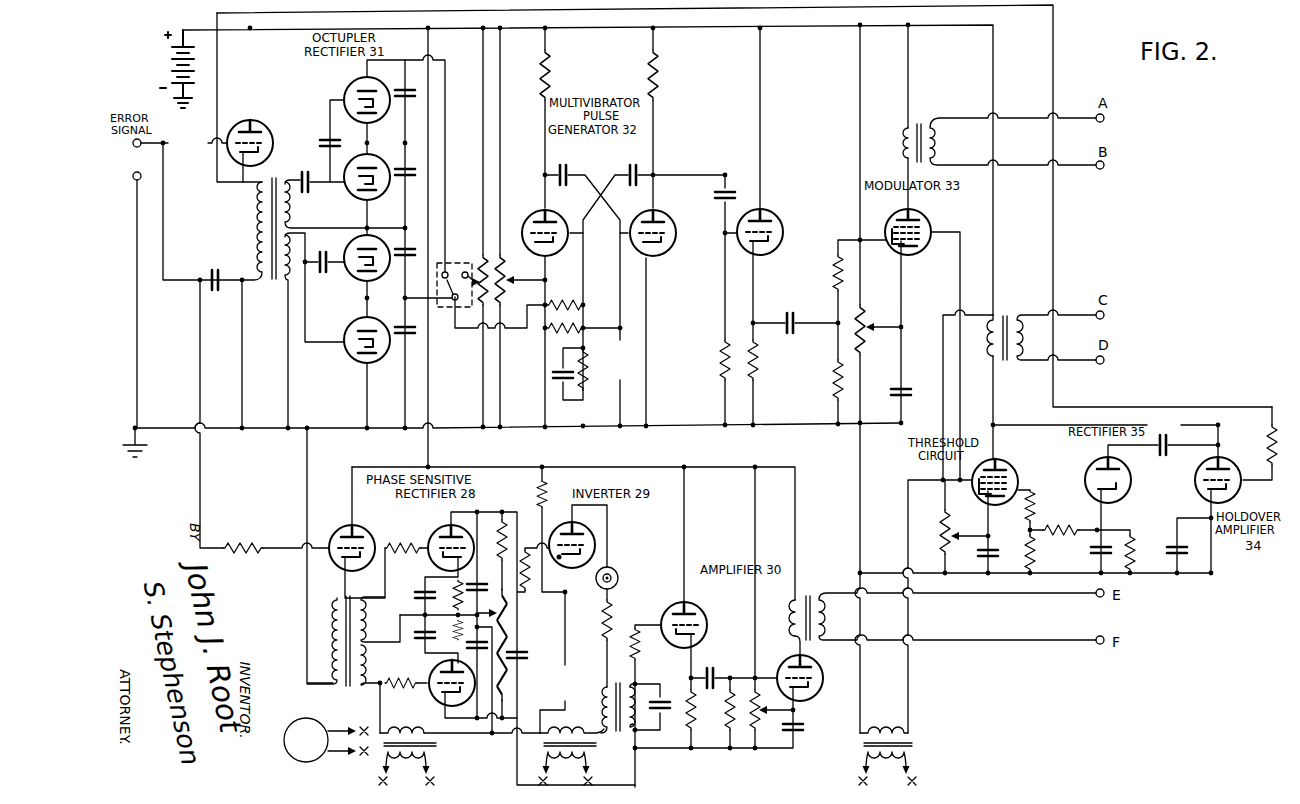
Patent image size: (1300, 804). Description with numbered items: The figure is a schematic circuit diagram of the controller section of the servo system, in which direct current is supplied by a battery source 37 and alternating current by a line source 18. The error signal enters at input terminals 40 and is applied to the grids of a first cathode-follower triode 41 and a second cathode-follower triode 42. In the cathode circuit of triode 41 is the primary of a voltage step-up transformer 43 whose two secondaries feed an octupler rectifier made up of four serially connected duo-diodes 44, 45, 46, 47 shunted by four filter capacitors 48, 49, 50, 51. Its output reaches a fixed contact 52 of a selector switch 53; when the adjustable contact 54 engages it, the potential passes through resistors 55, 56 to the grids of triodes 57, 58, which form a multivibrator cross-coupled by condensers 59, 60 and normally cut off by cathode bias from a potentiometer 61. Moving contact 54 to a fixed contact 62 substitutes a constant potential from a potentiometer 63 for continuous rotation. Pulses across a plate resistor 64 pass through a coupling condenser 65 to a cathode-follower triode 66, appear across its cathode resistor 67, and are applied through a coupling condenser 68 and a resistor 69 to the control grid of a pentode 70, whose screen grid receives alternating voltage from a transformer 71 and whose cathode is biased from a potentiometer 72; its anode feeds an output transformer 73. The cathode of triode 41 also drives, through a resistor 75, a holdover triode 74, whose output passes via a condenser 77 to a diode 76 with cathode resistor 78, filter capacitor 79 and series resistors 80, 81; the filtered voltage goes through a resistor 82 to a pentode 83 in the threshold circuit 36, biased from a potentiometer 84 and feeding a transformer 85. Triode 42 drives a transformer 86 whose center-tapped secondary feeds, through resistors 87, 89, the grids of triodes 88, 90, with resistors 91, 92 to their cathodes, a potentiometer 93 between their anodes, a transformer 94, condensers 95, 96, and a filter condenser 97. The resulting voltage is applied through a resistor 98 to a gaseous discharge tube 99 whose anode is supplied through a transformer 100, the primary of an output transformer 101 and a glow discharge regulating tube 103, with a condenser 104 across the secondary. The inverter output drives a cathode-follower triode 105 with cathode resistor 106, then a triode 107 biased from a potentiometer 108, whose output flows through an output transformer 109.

The line source 18 is at (299, 719).
The threshold circuit 36 is at (954, 465).
The battery source 37 is at (170, 76).
The input terminals 40 is at (122, 148).
The triode 41 is at (264, 128).
The triode 42 is at (319, 534).
The voltage step-up transformer 43 is at (279, 280).
The duo-diode 44 is at (346, 128).
The duo-diode 45 is at (352, 196).
The duo-diode 46 is at (347, 247).
The duo-diode 47 is at (356, 362).
The filter capacitor 48 is at (405, 88).
The filter capacitor 49 is at (407, 169).
The filter capacitor 50 is at (412, 242).
The filter capacitor 51 is at (412, 320).
The fixed contact 52 is at (443, 271).
The selector switch 53 is at (446, 307).
The adjustable contact 54 is at (428, 289).
The resistor 55 is at (565, 333).
The resistor 56 is at (570, 293).
The triode 57 is at (541, 212).
The triode 58 is at (660, 212).
The condenser 59 is at (569, 164).
The condenser 60 is at (630, 164).
The potentiometer 61 is at (502, 242).
The fixed contact 62 is at (467, 271).
The potentiometer 63 is at (480, 255).
The plate resistor 64 is at (659, 76).
The coupling condenser 65 is at (727, 192).
The triode 66 is at (773, 220).
The cathode resistor 67 is at (758, 357).
The coupling condenser 68 is at (786, 319).
The resistor 69 is at (831, 265).
The pentode 70 is at (915, 215).
The transformer 71 is at (913, 748).
The potentiometer 72 is at (866, 315).
The output transformer 73 is at (921, 116).
The triode 74 is at (1230, 464).
The resistor 75 is at (1280, 435).
The diode 76 is at (1122, 494).
The condenser 77 is at (1164, 452).
The resistor 78 is at (1134, 549).
The capacitor 79 is at (1086, 554).
The resistor 80 is at (1053, 528).
The resistor 81 is at (1028, 551).
The resistor 82 is at (1026, 511).
The pentode 83 is at (1016, 478).
The potentiometer 84 is at (938, 540).
The transformer 85 is at (1010, 315).
The transformer 86 is at (363, 687).
The resistor 87 is at (411, 545).
The triode 88 is at (444, 526).
The resistor 89 is at (407, 687).
The triode 90 is at (438, 705).
The resistor 91 is at (434, 591).
The resistor 92 is at (434, 643).
The potentiometer 93 is at (512, 623).
The transformer 94 is at (428, 747).
The condenser 95 is at (478, 587).
The condenser 96 is at (470, 625).
The filter condenser 97 is at (523, 664).
The resistor 98 is at (525, 548).
The gaseous discharge tube 99 is at (575, 523).
The transformer 100 is at (577, 756).
The output transformer 101 is at (608, 698).
The glow discharge regulating tube 103 is at (616, 577).
The condenser 104 is at (650, 668).
The triode 105 is at (690, 609).
The cathode resistor 106 is at (688, 728).
The triode 107 is at (817, 684).
The potentiometer 108 is at (758, 745).
The output transformer 109 is at (815, 593).